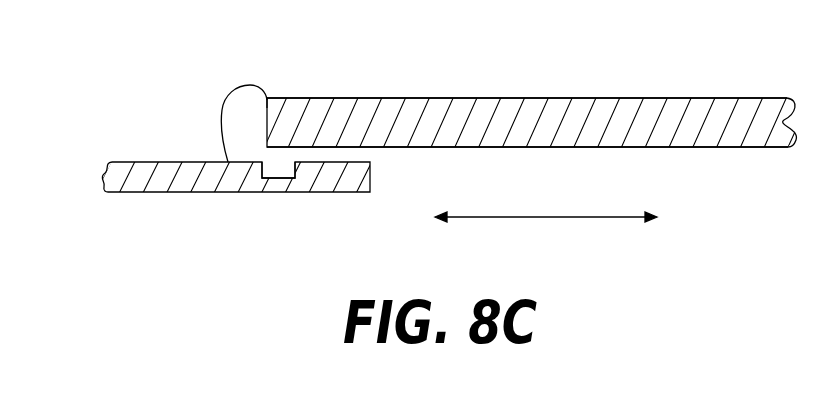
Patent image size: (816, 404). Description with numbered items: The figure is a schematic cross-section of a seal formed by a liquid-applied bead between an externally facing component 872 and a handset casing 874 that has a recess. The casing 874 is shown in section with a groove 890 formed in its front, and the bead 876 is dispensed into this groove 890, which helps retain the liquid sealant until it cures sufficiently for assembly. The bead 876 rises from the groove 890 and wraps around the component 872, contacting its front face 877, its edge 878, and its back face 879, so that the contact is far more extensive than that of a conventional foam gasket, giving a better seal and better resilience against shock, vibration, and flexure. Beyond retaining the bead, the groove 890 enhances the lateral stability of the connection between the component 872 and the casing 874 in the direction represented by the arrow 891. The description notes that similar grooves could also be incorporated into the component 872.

The component 872 is at (722, 128).
The casing 874 is at (217, 187).
The bead 876 is at (239, 133).
The front face 877 is at (565, 148).
The edge 878 is at (288, 96).
The back face 879 is at (508, 97).
The groove 890 is at (282, 180).
The arrow 891 is at (540, 217).